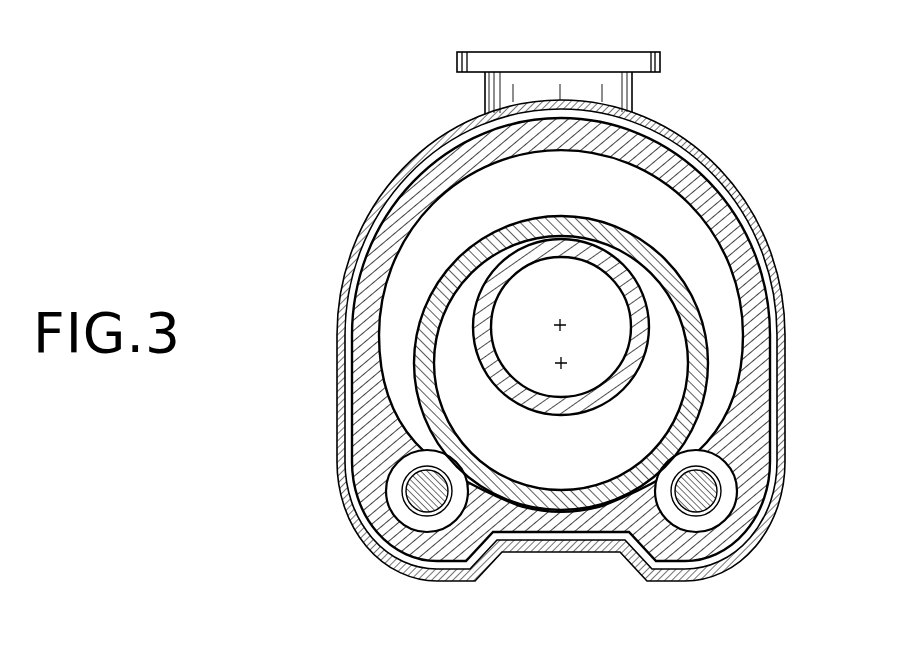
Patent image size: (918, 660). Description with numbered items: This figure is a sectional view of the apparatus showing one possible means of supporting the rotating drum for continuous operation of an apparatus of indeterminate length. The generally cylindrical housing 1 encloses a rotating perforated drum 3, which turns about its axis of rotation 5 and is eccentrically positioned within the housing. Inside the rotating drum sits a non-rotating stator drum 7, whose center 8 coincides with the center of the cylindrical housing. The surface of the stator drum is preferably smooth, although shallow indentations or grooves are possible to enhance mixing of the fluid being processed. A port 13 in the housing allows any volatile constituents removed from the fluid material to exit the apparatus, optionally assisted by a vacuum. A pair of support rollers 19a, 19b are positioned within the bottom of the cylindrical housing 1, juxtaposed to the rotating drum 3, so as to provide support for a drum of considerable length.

The cylindrical housing 1 is at (427, 150).
The rotating drum 3 is at (670, 282).
The axis of rotation 5 is at (562, 368).
The non-rotating stator drum 7 is at (497, 278).
The center 8 is at (558, 327).
The port 13 is at (560, 50).
The support roller 19a is at (425, 498).
The support roller 19b is at (704, 503).